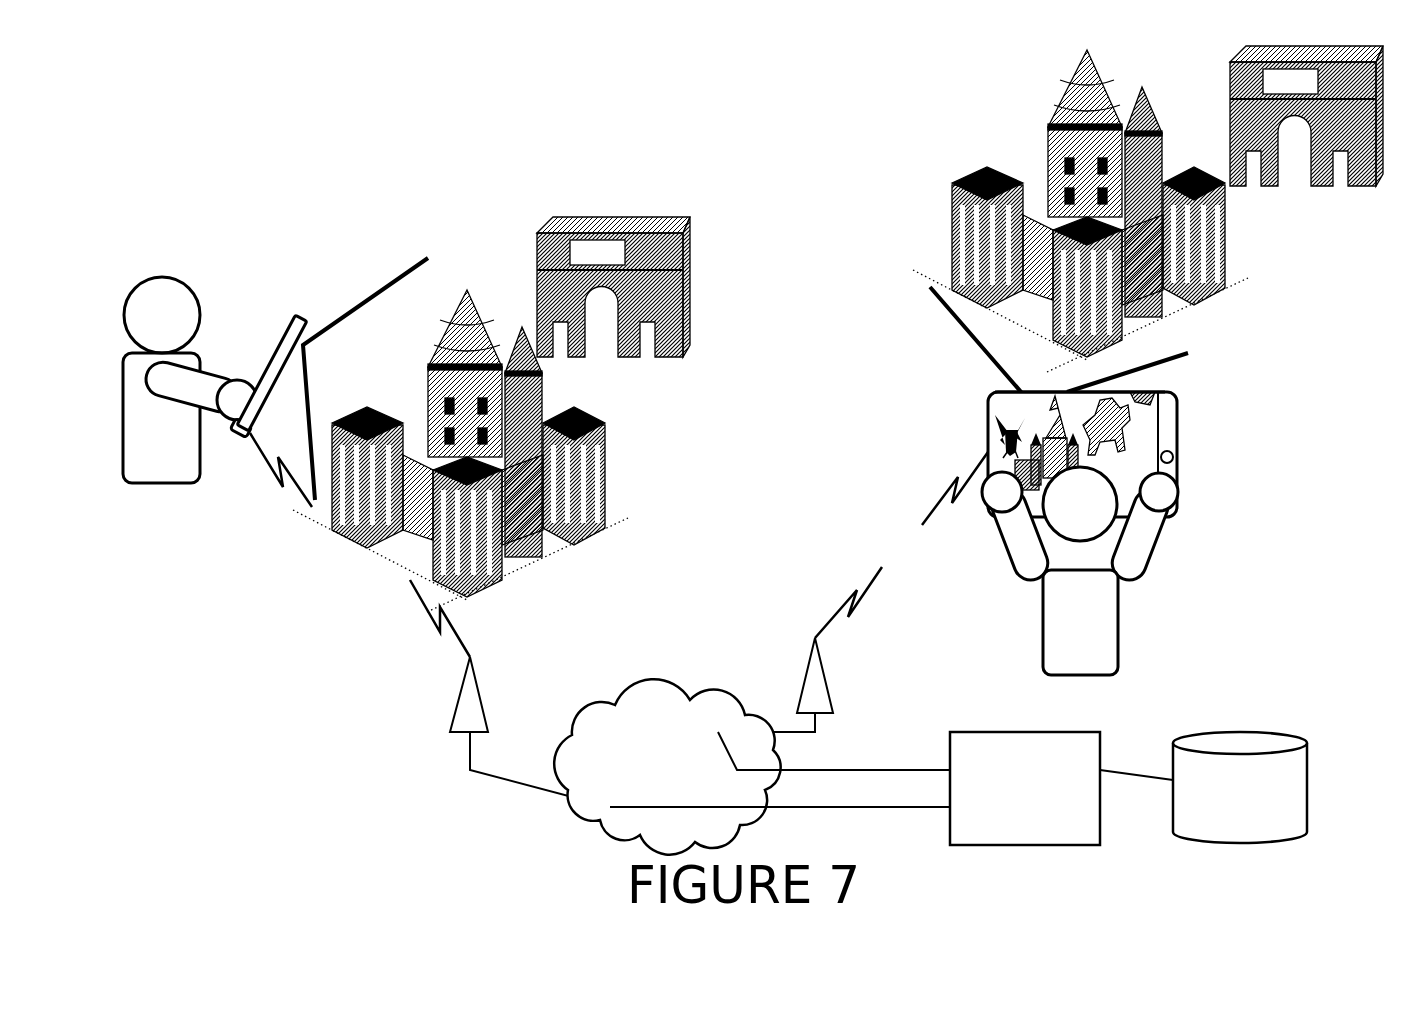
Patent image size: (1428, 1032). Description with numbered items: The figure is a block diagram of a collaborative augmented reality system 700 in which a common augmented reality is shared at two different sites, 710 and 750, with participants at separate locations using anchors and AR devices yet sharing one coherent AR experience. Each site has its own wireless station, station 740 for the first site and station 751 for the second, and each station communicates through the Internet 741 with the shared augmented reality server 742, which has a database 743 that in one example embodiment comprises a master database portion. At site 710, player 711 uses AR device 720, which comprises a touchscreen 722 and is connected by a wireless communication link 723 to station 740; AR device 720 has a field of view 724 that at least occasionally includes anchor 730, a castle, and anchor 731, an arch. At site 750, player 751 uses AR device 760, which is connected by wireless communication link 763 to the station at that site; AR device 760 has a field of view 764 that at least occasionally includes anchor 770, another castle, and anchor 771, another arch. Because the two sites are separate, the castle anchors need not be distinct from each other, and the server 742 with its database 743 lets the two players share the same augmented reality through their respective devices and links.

The augmented reality system 700 is at (225, 92).
The site 710 is at (778, 660).
The player 711 is at (1042, 617).
The AR device 720 is at (988, 436).
The touchscreen 722 is at (1008, 402).
The wireless communication link 723 is at (935, 503).
The field of view 724 is at (972, 342).
The anchor 730 is at (1100, 90).
The anchor 731 is at (1265, 177).
The wireless station 740 is at (828, 690).
The Internet 741 is at (590, 832).
The shared augmented reality server 742 is at (1008, 733).
The database 743 is at (1233, 731).
The site 750 is at (540, 660).
The player / wireless station 751 is at (183, 278).
The AR device 760 is at (300, 316).
The wireless communication link 763 is at (297, 487).
The field of view 764 is at (397, 281).
The anchor 770 is at (442, 352).
The anchor 771 is at (573, 350).